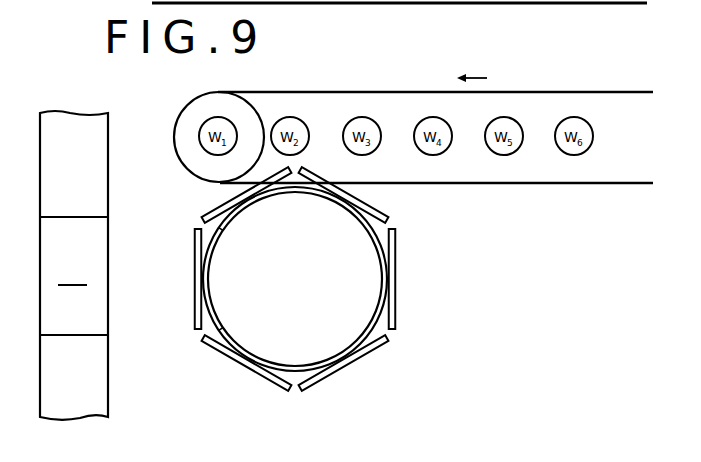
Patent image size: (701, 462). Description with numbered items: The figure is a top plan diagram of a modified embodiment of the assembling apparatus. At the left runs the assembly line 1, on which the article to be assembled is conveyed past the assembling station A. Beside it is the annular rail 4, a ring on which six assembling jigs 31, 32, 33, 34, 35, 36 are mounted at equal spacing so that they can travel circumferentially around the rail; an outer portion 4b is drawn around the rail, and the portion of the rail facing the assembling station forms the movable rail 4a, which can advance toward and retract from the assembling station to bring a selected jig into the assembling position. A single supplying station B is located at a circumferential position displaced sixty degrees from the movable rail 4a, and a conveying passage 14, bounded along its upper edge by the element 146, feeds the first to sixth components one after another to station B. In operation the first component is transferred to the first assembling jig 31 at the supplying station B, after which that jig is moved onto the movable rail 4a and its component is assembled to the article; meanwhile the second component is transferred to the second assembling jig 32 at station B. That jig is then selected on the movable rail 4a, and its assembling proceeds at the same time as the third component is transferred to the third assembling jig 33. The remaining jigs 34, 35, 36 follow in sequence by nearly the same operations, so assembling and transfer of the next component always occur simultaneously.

The assembly line 1 is at (99, 166).
The conveying passage 14 is at (392, 92).
The guide rail 146 is at (566, 4).
The supplying station B is at (193, 113).
The annular rail 4 is at (333, 279).
The movable rail 4a is at (208, 277).
The drum outer ring 4b is at (382, 253).
The first assembling jig 31 is at (207, 212).
The second assembling jig 32 is at (383, 210).
The third assembling jig 33 is at (395, 293).
The fourth assembling jig 34 is at (338, 367).
The fifth assembling jig 35 is at (263, 368).
The sixth assembling jig 36 is at (197, 303).